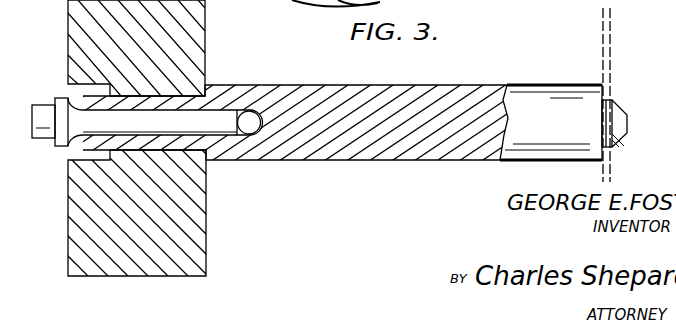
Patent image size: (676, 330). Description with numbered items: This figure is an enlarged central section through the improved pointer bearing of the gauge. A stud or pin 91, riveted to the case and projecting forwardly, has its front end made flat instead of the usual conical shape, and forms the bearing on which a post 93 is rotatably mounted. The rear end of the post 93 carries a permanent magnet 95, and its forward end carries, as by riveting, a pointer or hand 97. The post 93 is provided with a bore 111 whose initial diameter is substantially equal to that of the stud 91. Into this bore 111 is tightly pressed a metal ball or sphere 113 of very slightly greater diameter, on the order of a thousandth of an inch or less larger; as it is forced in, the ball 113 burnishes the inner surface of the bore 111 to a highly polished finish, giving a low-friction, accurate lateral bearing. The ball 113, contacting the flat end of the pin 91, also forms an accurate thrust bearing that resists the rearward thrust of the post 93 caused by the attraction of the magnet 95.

The stud or pin 91 is at (208, 122).
The post 93 is at (405, 150).
The permanent magnet 95 is at (68, 1).
The pointer or hand 97 is at (611, 38).
The bore 111 is at (242, 110).
The metal ball or sphere 113 is at (246, 132).